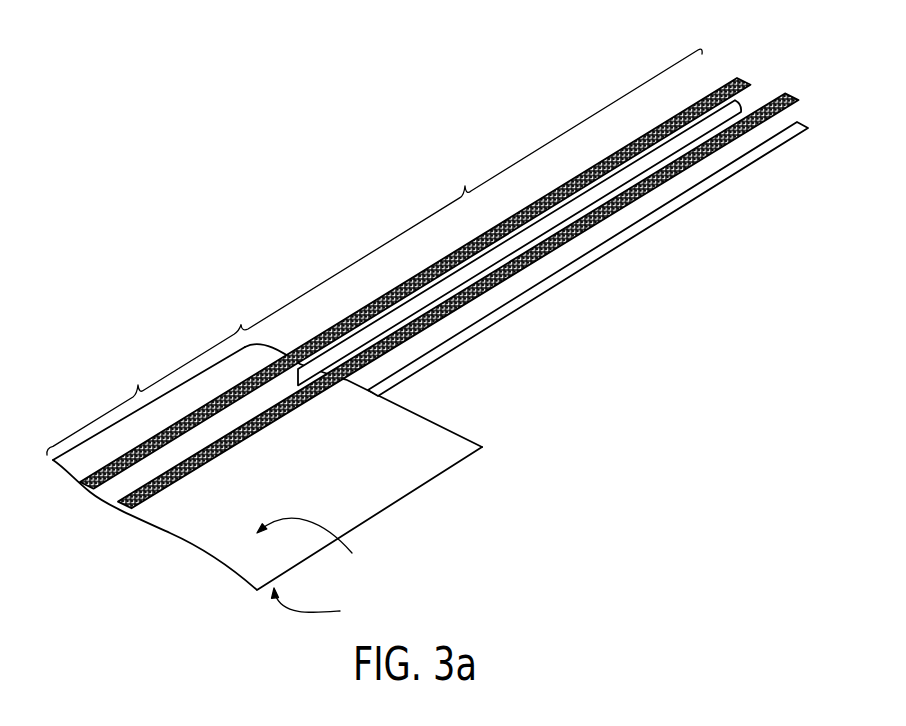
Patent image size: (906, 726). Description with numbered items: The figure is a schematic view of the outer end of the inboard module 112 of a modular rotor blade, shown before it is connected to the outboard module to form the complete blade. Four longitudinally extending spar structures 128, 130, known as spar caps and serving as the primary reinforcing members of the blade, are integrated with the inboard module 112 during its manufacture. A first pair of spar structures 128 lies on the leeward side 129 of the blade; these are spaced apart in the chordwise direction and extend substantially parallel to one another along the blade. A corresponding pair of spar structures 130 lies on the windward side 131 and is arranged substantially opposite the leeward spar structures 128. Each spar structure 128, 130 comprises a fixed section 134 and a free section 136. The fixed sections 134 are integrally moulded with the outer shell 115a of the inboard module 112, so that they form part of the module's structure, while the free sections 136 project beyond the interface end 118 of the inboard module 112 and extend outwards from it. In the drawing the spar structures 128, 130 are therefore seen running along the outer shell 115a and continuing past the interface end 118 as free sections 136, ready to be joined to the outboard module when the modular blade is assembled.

The inboard module 112 is at (64, 417).
The outer shell 115a is at (386, 509).
The interface end 118 is at (414, 410).
The spar structures 128 is at (51, 463).
The leeward side 129 is at (319, 541).
The spar structures 130 is at (733, 112).
The windward side 131 is at (320, 606).
The fixed section 134 is at (144, 390).
The free section 136 is at (471, 189).